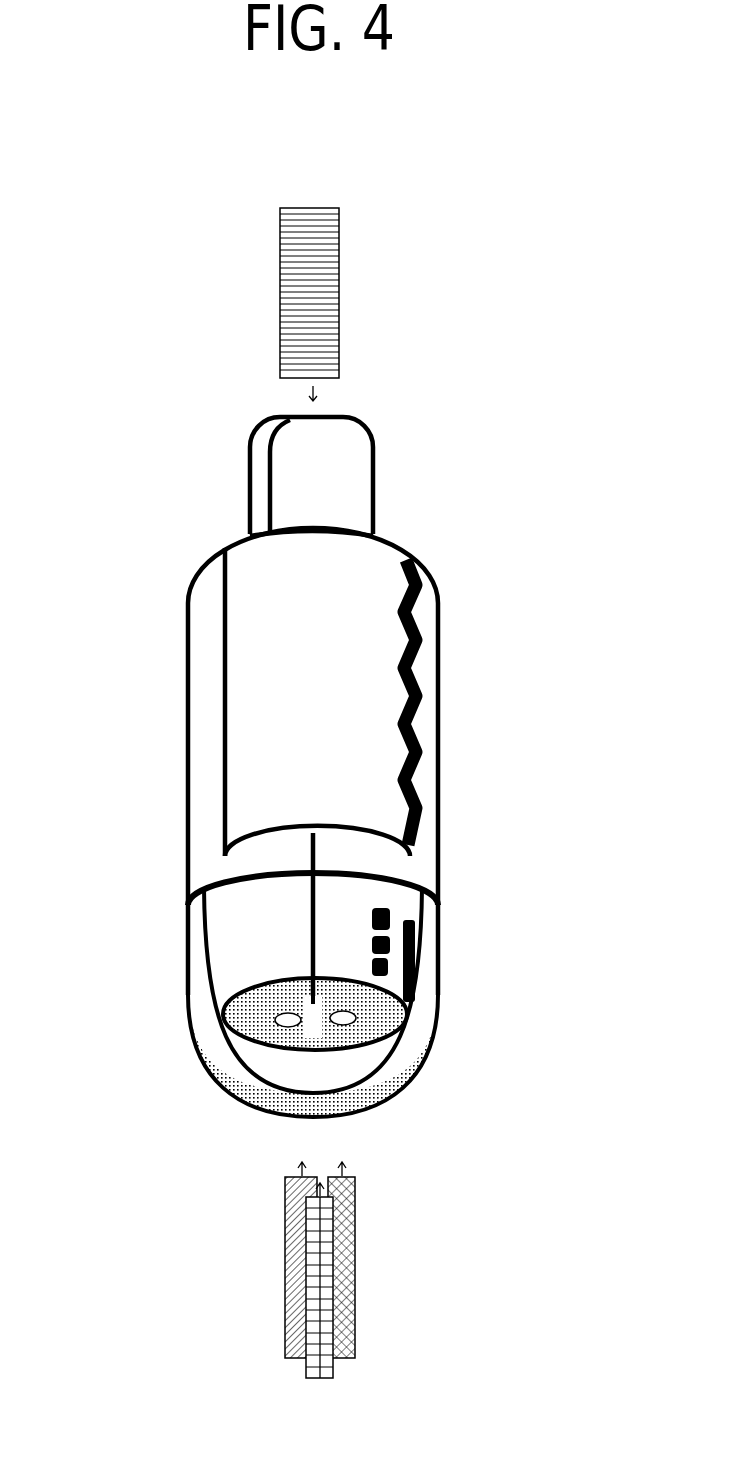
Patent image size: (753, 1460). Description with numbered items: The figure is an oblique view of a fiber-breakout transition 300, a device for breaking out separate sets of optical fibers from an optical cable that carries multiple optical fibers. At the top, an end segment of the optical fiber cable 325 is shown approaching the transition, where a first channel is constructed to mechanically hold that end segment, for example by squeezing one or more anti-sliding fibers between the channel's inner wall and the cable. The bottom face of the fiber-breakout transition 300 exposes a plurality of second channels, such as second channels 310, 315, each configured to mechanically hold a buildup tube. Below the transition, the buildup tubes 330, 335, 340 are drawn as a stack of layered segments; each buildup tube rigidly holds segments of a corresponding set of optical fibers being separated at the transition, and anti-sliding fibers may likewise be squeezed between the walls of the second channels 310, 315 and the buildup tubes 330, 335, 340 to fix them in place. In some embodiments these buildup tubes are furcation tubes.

The fiber-breakout transition 300 is at (281, 626).
The optical fiber cable 325 is at (270, 300).
The second channel 310 is at (278, 1023).
The second channel 315 is at (332, 1028).
The buildup tube 330 is at (333, 1210).
The buildup tube 335 is at (317, 1265).
The buildup tube 340 is at (345, 1325).